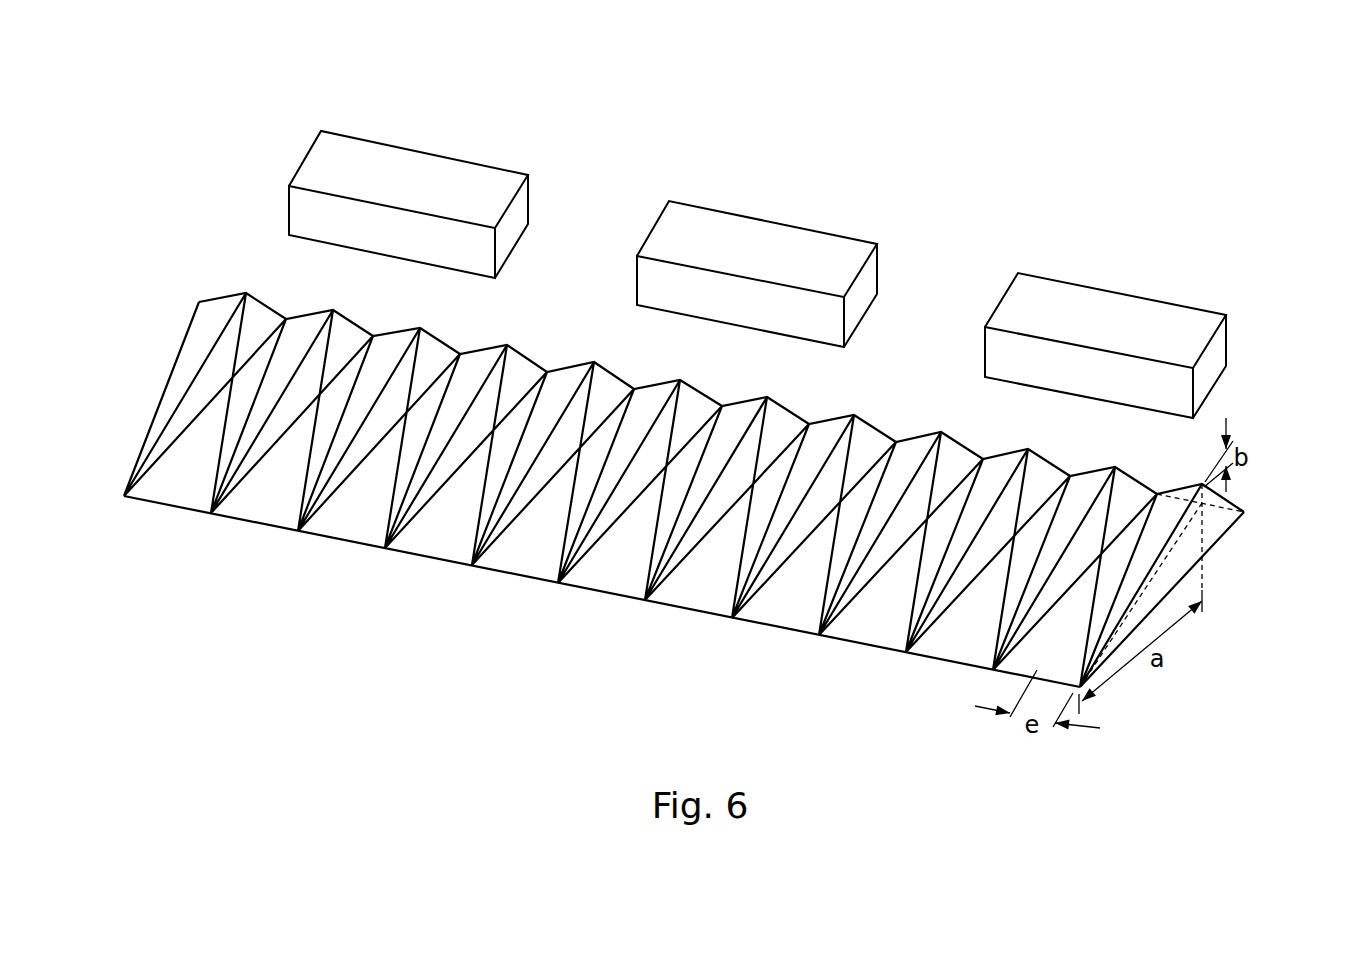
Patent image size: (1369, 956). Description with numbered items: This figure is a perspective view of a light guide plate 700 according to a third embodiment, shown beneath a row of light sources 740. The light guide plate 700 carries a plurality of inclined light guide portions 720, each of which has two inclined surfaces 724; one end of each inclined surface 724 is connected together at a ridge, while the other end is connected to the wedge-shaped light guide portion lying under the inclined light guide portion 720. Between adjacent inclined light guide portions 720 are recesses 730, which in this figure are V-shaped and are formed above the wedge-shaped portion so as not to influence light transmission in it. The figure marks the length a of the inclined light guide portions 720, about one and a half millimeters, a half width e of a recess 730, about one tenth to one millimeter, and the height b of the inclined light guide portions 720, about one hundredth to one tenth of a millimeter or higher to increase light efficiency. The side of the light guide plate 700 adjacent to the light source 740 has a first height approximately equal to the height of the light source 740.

The light guide plate 700 is at (715, 490).
The inclined light guide portion 720 is at (185, 387).
The inclined surface 724 is at (205, 311).
The recess 730 is at (440, 543).
The light source 740 is at (405, 178).